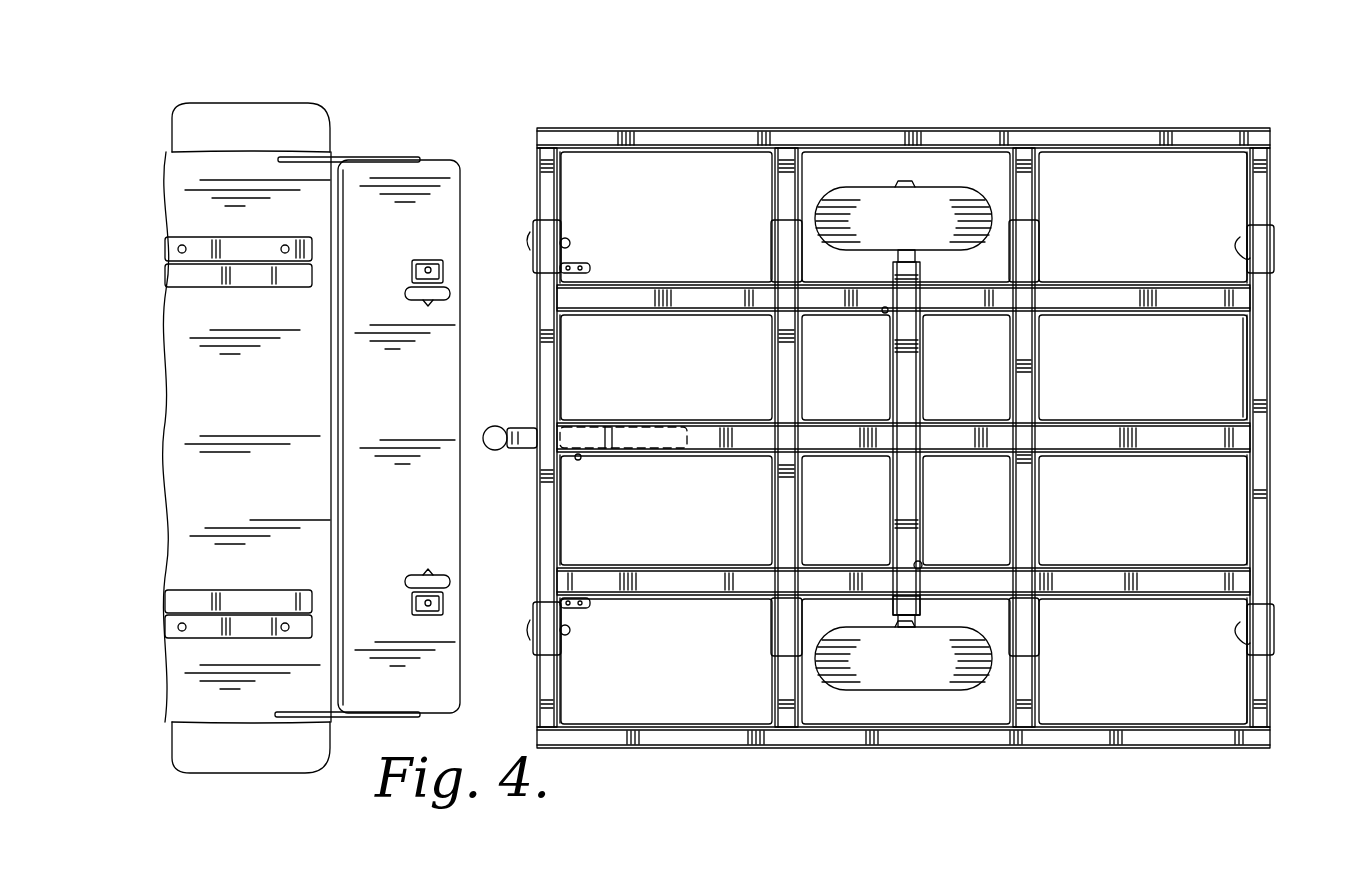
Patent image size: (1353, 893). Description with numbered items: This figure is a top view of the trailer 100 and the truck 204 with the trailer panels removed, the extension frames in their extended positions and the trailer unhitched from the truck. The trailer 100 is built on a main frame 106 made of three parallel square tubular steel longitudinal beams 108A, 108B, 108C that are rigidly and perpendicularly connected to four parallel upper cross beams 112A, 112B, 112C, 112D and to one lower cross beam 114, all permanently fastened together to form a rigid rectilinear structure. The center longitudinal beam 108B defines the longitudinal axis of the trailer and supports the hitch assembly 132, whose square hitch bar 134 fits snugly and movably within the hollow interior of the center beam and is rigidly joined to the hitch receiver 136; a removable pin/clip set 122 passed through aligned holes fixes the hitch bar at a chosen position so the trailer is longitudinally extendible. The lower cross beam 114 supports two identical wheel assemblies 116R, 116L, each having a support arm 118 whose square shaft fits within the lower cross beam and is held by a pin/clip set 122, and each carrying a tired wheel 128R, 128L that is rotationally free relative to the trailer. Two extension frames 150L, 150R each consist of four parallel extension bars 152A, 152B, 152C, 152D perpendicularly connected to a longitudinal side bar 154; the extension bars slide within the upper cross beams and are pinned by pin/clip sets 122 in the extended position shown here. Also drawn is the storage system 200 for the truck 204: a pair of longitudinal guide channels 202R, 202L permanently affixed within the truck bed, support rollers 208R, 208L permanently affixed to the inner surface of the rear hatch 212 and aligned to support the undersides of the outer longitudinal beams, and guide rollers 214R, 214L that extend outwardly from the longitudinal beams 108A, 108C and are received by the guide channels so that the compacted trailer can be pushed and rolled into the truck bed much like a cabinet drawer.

The trailer 100 is at (885, 124).
The main frame 106 is at (1272, 385).
The longitudinal beam 108A is at (1185, 596).
The center longitudinal beam 108B is at (580, 414).
The longitudinal beam 108C is at (1090, 285).
The upper cross beam 112A is at (560, 345).
The upper cross beam 112B is at (775, 370).
The upper cross beam 112C is at (1036, 354).
The upper cross beam 112D is at (1247, 370).
The lower cross beam 114 is at (893, 520).
The wheel assembly 116L is at (903, 700).
The wheel assembly 116R is at (906, 186).
The support arm 118 is at (920, 620).
The removable pin/clip set 122 is at (568, 242).
The tired wheel 128L is at (880, 625).
The tired wheel 128R is at (934, 186).
The hitch assembly 132 is at (520, 452).
The hitch bar 134 is at (657, 455).
The hitch receiver 136 is at (495, 424).
The extension frame 150L is at (1155, 748).
The extension frame 150R is at (1290, 181).
The extension bar 152A is at (557, 186).
The extension bar 152B is at (795, 210).
The extension bar 152C is at (1035, 212).
The extension bar 152D is at (1274, 224).
The longitudinal side bar 154 is at (715, 128).
The system 200 is at (622, 57).
The longitudinal guide channel 202L is at (218, 590).
The longitudinal guide channel 202R is at (232, 288).
The truck 204 is at (232, 103).
The support roller 208L is at (455, 587).
The support roller 208R is at (455, 290).
The rear hatch 212 is at (415, 212).
The guide roller 214L is at (592, 612).
The guide roller 214R is at (590, 270).